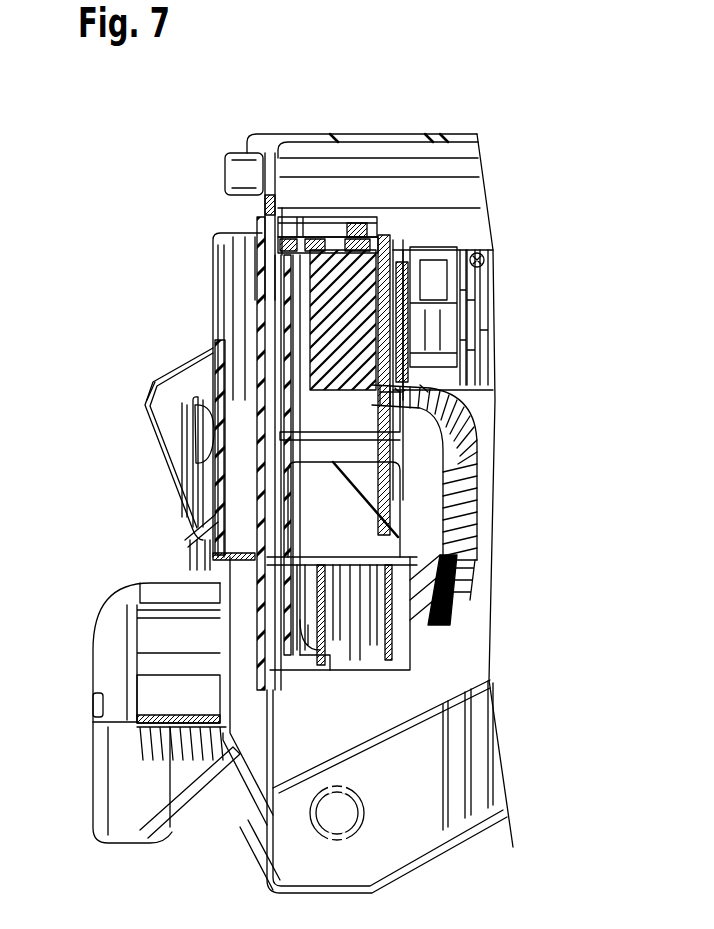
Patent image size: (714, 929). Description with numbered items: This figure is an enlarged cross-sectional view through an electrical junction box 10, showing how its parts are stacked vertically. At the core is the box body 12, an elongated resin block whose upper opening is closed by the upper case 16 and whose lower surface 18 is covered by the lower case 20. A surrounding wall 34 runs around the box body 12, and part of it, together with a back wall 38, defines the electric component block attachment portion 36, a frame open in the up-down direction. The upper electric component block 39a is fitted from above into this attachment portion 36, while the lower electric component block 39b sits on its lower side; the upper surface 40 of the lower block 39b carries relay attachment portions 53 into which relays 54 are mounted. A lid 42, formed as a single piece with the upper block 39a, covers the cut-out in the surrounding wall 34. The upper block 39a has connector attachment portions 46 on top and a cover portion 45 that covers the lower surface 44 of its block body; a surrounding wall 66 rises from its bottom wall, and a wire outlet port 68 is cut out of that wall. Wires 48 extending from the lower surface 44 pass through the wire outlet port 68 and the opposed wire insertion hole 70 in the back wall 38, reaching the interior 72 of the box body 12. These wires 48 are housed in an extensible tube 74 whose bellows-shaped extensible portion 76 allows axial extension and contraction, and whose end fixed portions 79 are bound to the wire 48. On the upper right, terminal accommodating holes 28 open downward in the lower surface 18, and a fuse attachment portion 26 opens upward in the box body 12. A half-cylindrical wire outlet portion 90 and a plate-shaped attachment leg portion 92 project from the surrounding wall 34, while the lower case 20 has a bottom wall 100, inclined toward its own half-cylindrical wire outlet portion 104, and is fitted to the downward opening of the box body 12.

The electrical junction box 10 is at (365, 49).
The upper case 16 is at (385, 106).
The electric component block attachment portion 36 is at (410, 215).
The upper electric component block 39a is at (398, 238).
The fuse attachment portion 26 is at (482, 252).
The connector attachment portion 46 is at (405, 285).
The back wall 38 is at (412, 305).
The box body 12 is at (505, 328).
The terminal accommodating hole 28 is at (432, 330).
The lower surface 18 is at (481, 362).
The extensible portion 76 is at (372, 390).
The wire 48 is at (325, 380).
The lid 42 is at (215, 350).
The surrounding wall 66 is at (280, 380).
The attachment leg portion 92 is at (167, 427).
The lower surface 44 is at (333, 397).
The cover portion 45 is at (317, 443).
The relay 54 is at (317, 513).
The wire outlet port 68 is at (404, 390).
The wire insertion hole 70 is at (432, 381).
The interior 72 is at (490, 412).
The extensible tube 74 is at (490, 433).
The fixed portion 79 is at (415, 432).
The lower electric component block 39b is at (408, 507).
The upper surface 40 is at (440, 535).
The surrounding wall 34 is at (410, 612).
The relay attachment portion 53 is at (295, 640).
The wire outlet portion 90 is at (117, 670).
The wire outlet portion 104 is at (117, 780).
The bottom wall 100 is at (410, 783).
The lower case 20 is at (436, 866).